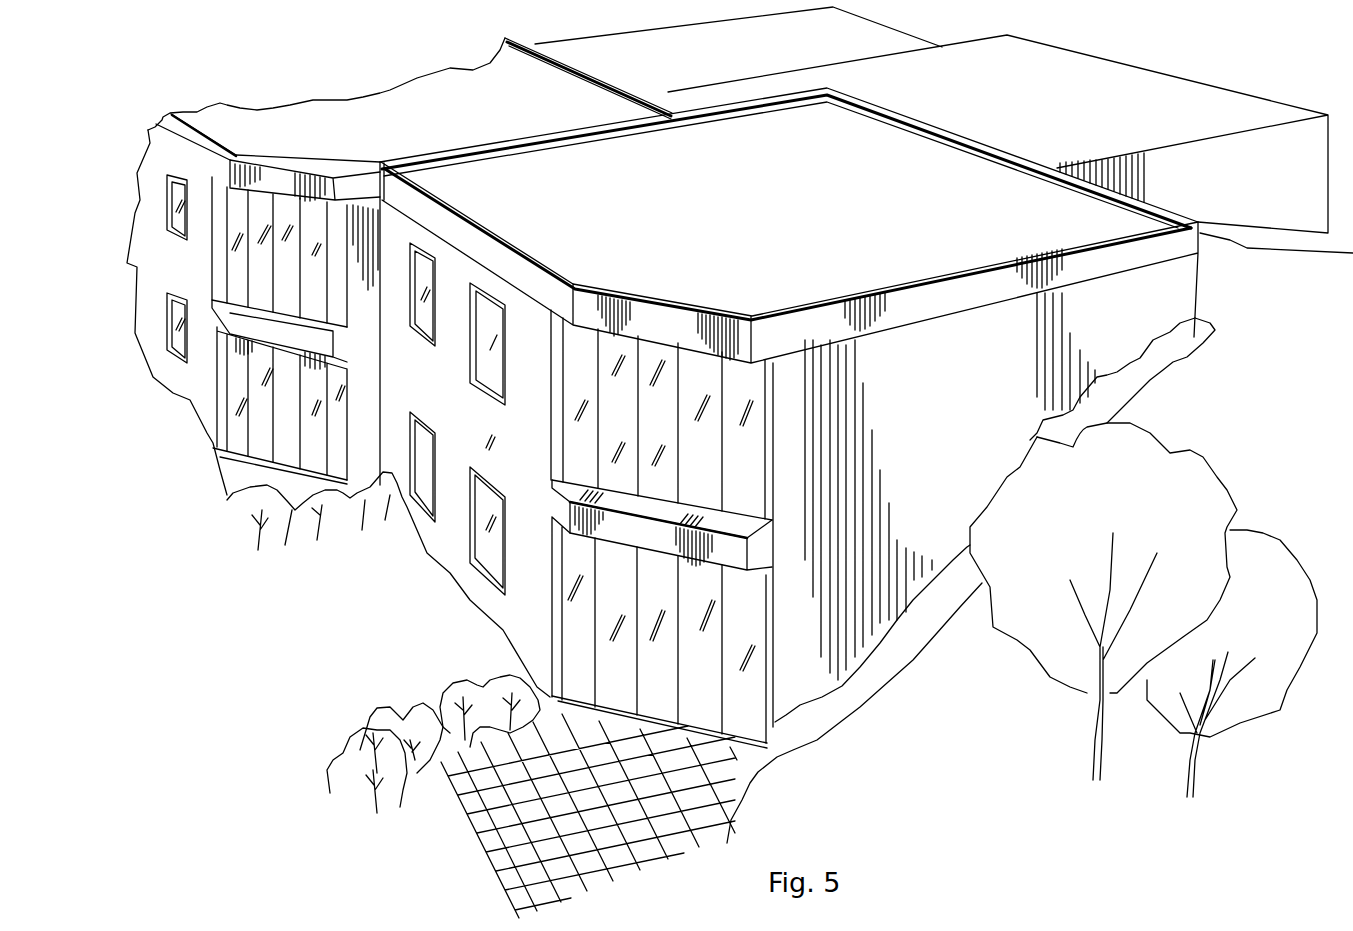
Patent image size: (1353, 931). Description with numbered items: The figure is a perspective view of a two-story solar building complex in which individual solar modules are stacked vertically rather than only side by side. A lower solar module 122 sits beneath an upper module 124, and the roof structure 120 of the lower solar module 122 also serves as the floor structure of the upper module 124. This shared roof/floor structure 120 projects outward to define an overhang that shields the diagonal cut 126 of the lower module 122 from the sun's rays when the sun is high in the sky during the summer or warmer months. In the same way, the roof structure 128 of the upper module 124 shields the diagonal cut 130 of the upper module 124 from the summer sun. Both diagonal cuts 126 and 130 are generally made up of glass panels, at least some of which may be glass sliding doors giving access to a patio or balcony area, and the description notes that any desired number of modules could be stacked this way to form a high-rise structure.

The roof structure 120 is at (612, 530).
The lower solar module 122 is at (533, 630).
The upper module 124 is at (509, 424).
The diagonal cut 126 is at (746, 715).
The roof structure 128 is at (906, 308).
The diagonal cut 130 is at (611, 424).